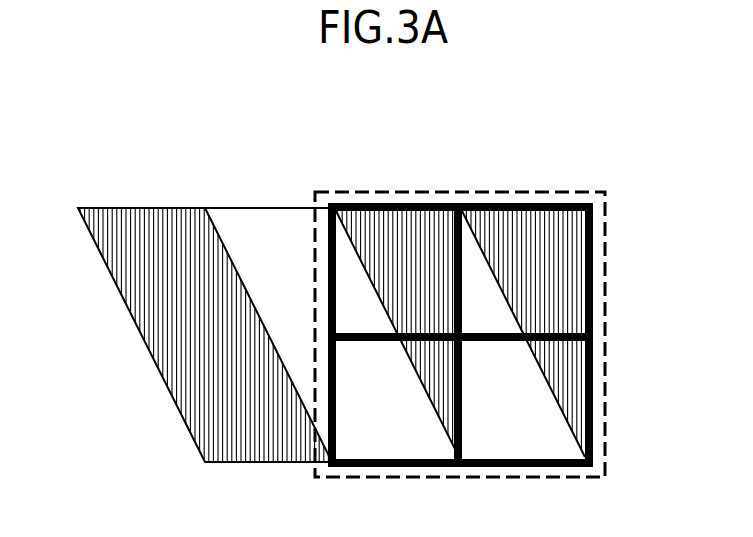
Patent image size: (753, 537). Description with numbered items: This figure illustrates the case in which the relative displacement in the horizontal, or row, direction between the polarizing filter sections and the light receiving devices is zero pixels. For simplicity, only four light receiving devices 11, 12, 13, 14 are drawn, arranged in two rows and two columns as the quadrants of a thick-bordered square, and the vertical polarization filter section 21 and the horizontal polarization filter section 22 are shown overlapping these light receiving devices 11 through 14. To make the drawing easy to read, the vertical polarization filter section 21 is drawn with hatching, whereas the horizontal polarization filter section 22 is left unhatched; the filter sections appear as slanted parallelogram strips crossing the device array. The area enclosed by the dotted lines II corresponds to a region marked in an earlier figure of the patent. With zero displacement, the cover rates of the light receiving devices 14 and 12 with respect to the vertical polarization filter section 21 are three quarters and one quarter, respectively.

The light receiving device 11 is at (332, 287).
The light receiving device 12 is at (590, 276).
The light receiving device 13 is at (332, 398).
The light receiving device 14 is at (590, 398).
The vertical polarization filter section 21 is at (173, 215).
The horizontal polarization filter section 22 is at (273, 225).
The dotted lines II is at (451, 190).